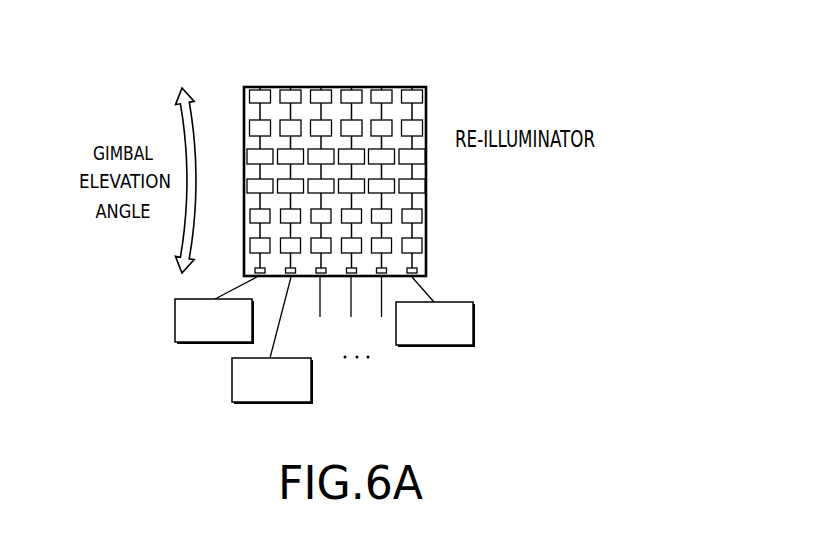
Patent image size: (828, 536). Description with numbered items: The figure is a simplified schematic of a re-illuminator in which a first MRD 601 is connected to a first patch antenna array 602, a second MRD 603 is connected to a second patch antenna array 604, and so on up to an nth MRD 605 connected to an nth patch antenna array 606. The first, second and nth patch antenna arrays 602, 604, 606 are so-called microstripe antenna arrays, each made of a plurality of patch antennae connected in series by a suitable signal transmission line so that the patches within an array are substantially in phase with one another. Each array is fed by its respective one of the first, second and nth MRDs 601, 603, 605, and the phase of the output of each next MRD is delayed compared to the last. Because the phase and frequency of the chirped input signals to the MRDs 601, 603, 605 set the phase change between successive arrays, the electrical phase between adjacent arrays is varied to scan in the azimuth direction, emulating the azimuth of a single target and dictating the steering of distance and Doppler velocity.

The first MRD 601 is at (175, 322).
The first patch antenna array 602 is at (260, 86).
The second MRD 603 is at (232, 386).
The second patch antenna array 604 is at (290, 86).
The nth MRD 605 is at (473, 323).
The nth patch antenna array 606 is at (413, 86).